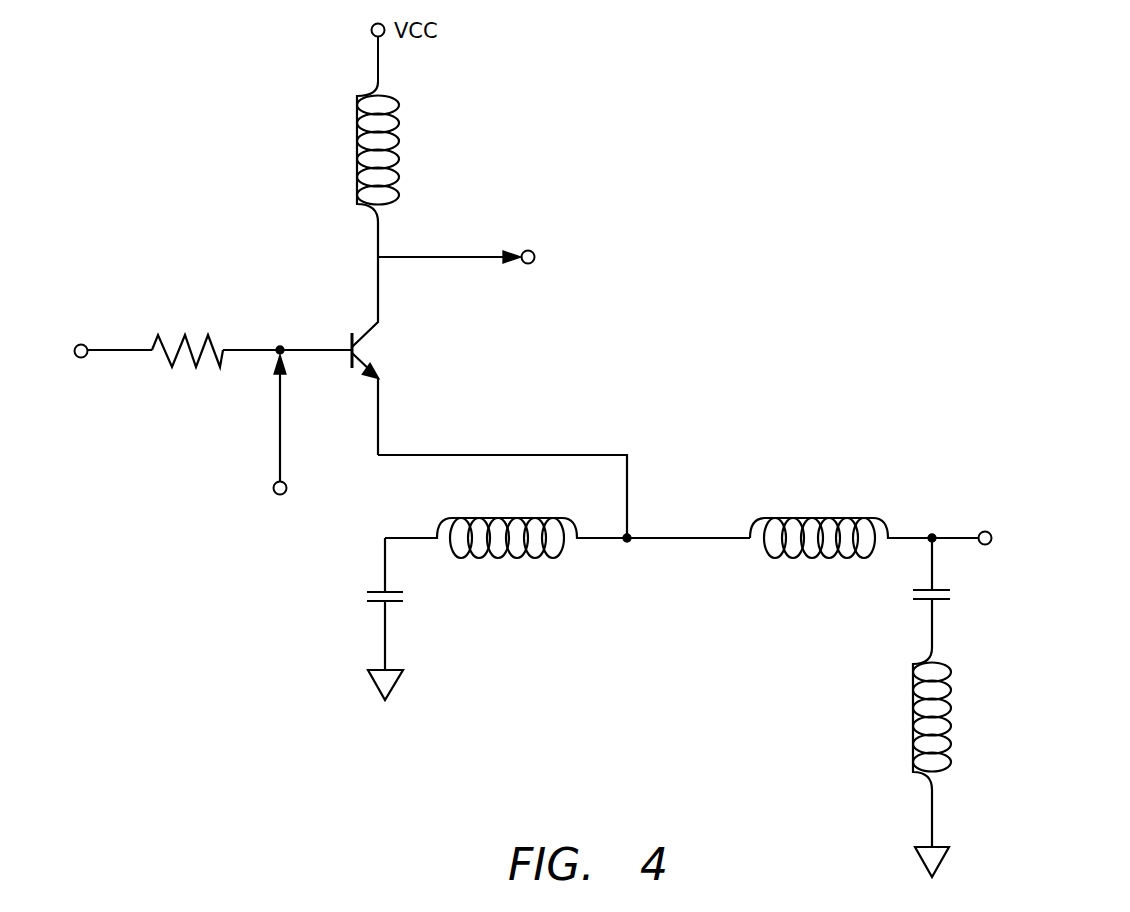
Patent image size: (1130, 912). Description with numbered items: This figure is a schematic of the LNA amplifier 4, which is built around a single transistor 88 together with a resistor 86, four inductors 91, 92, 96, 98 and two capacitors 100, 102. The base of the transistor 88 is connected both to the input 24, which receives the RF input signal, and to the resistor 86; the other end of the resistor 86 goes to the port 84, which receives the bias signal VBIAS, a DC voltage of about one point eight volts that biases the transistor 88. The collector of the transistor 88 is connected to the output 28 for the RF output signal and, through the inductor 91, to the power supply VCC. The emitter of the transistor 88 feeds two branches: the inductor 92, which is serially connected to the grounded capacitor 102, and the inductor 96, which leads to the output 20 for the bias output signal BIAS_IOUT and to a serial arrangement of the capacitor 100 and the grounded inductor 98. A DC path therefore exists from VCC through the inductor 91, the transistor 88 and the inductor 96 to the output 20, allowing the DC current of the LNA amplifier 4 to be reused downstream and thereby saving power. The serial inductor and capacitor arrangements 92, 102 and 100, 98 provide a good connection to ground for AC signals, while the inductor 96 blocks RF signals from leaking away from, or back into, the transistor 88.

The LNA amplifier 4 is at (280, 223).
The bias output terminal BIAS_IOUT 20 is at (988, 546).
The input 24 is at (275, 483).
The output 28 is at (525, 249).
The port 84 is at (82, 360).
The resistor 86 is at (210, 330).
The transistor 88 is at (346, 339).
The inductor 91 is at (358, 130).
The inductor 92 is at (520, 515).
The inductor 96 is at (783, 515).
The inductor 98 is at (951, 705).
The capacitor 100 is at (918, 598).
The capacitor 102 is at (365, 590).